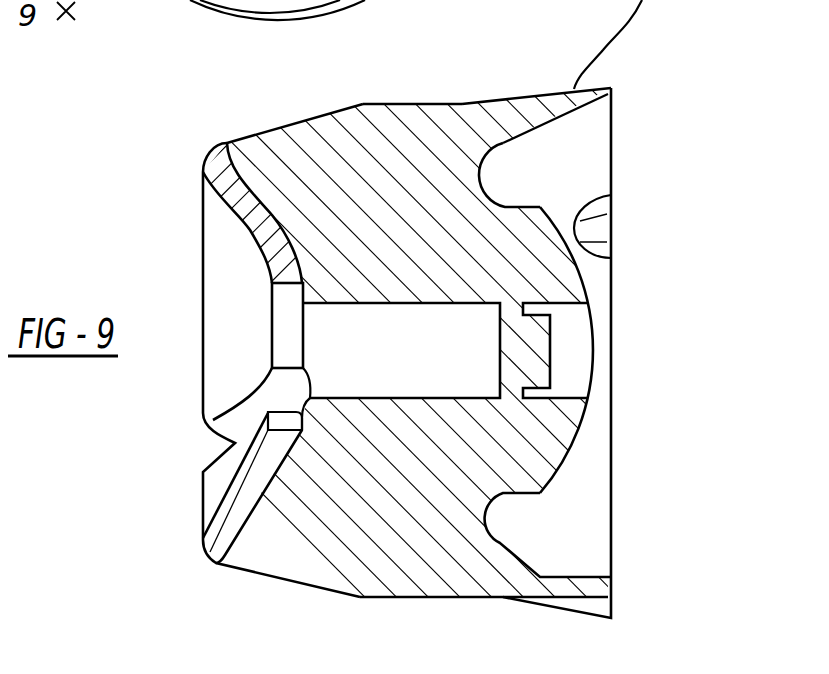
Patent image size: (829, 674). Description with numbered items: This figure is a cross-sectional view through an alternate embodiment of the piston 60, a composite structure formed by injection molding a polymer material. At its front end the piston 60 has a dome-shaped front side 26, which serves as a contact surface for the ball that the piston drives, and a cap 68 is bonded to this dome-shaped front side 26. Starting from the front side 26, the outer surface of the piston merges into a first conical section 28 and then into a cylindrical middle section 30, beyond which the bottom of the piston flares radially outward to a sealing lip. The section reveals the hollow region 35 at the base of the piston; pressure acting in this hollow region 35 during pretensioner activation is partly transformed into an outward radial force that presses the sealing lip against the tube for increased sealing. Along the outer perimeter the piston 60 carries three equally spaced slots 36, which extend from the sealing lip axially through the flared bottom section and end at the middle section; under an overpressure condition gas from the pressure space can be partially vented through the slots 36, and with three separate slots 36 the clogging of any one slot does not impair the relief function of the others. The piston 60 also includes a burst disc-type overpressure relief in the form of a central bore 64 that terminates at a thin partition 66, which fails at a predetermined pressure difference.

The dome-shaped front side 26 is at (245, 220).
The first conical section 28 is at (297, 122).
The cylindrical middle section 30 is at (465, 103).
The hollow region 35 is at (553, 175).
The slots 36 is at (574, 600).
The piston 60 is at (390, 105).
The central bore 64 is at (318, 304).
The thin partition 66 is at (551, 347).
The cap 68 is at (203, 547).